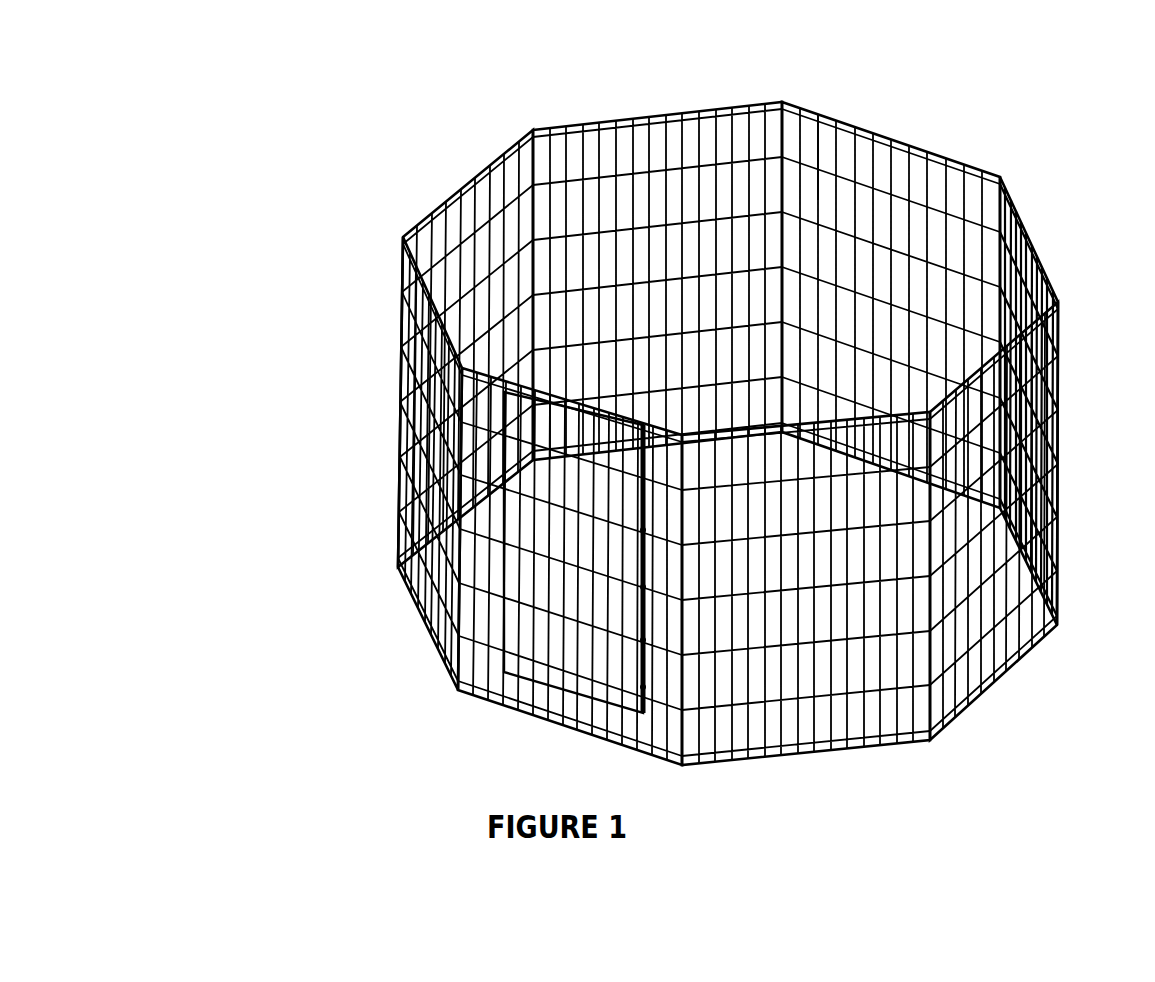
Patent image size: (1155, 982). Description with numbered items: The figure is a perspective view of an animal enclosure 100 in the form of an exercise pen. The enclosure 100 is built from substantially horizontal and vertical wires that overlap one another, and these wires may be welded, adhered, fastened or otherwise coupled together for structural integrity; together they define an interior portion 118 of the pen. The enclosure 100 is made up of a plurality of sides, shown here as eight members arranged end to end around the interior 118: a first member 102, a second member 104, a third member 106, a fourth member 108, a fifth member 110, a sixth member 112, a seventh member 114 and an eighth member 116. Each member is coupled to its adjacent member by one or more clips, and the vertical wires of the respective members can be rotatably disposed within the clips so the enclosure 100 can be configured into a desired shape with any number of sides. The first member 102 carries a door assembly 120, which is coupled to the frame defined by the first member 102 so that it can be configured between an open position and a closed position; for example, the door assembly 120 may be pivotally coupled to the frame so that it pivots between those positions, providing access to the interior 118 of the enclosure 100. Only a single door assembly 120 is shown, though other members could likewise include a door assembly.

The animal enclosure 100 is at (243, 163).
The first member 102 is at (562, 730).
The second member 104 is at (428, 636).
The third member 106 is at (474, 180).
The fourth member 108 is at (640, 110).
The fifth member 110 is at (912, 140).
The sixth member 112 is at (1037, 237).
The seventh member 114 is at (996, 680).
The eighth member 116 is at (837, 757).
The interior portion 118 is at (819, 185).
The door assembly 120 is at (518, 628).